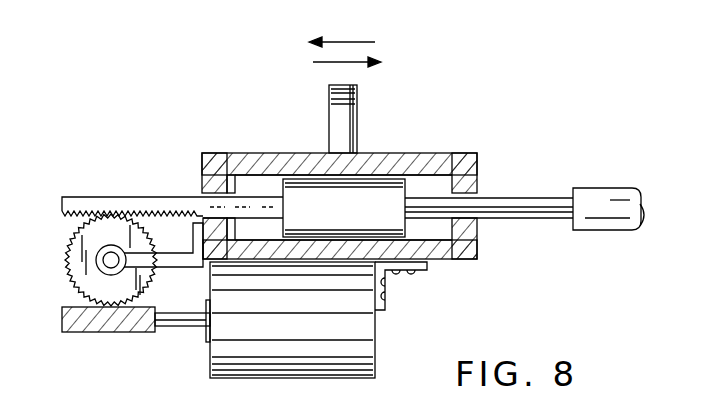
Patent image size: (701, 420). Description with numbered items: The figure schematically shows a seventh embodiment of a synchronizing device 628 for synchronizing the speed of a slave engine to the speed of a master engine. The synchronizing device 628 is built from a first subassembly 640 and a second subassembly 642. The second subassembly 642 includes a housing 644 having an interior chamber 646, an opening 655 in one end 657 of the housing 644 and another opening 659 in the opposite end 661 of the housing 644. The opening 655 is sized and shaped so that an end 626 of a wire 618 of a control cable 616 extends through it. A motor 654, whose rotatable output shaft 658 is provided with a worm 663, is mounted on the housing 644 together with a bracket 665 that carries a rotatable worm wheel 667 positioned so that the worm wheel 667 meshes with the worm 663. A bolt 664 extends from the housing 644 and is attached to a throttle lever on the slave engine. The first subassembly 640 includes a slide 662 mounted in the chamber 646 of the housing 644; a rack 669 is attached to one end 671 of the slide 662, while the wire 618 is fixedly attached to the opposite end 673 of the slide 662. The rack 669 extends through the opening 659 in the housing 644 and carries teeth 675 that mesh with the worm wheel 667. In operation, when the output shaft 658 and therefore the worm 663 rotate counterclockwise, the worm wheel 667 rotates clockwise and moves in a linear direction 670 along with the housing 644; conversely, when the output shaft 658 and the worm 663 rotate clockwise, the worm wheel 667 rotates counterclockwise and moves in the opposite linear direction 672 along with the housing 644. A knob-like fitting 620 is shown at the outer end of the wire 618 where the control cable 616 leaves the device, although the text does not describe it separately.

The control cable 616 is at (598, 236).
The wire 618 is at (540, 203).
The knob 620 is at (619, 202).
The end of wire 626 is at (415, 197).
The synchronizing device 628 is at (404, 294).
The first subassembly 640 is at (331, 180).
The second subassembly 642 is at (336, 200).
The housing 644 is at (440, 166).
The interior chamber 646 is at (235, 182).
The motor 654 is at (283, 347).
The opening 655 is at (466, 207).
The end of housing 657 is at (478, 193).
The output shaft 658 is at (180, 333).
The opening 659 is at (200, 200).
The opposite end of housing 661 is at (202, 163).
The slide 662 is at (352, 221).
The worm 663 is at (127, 332).
The bolt 664 is at (345, 108).
The bracket 665 is at (173, 262).
The worm wheel 667 is at (68, 254).
The rack 669 is at (103, 197).
The linear direction 670 is at (355, 62).
The end of slide 671 is at (277, 225).
The linear direction 672 is at (350, 42).
The opposite end of slide 673 is at (412, 226).
The teeth 675 is at (72, 212).